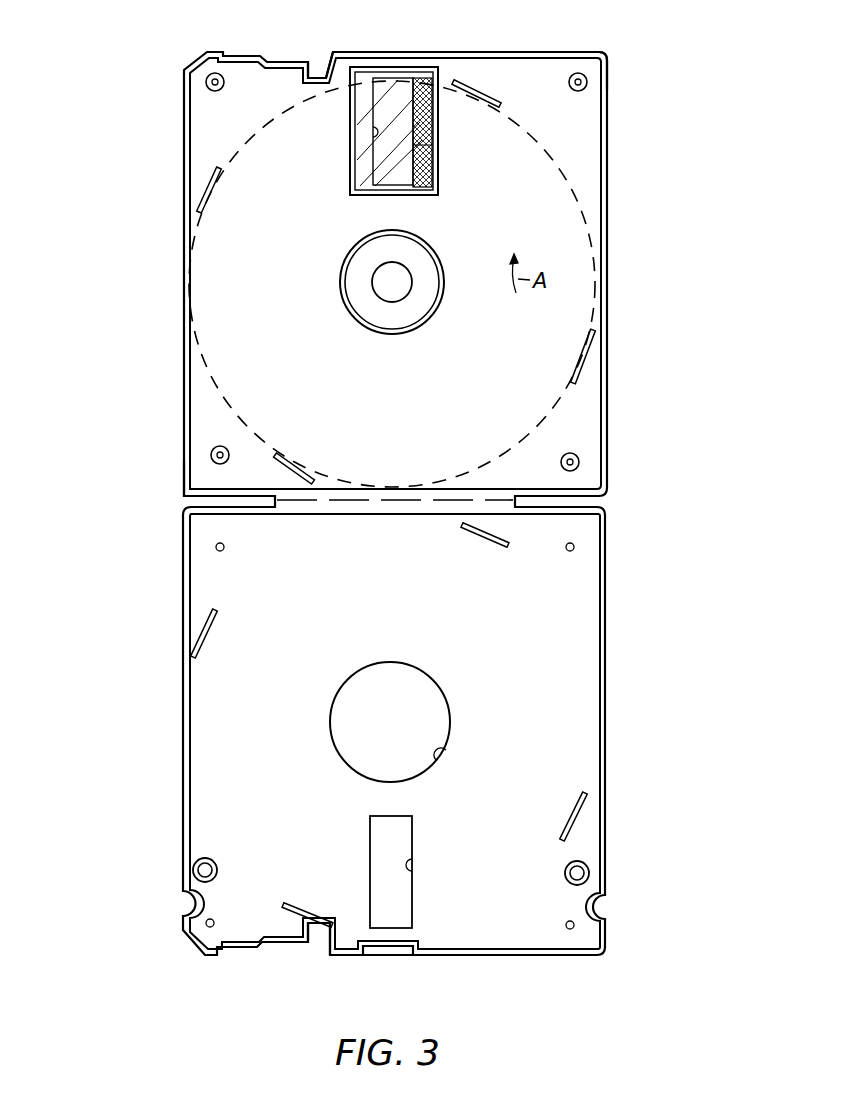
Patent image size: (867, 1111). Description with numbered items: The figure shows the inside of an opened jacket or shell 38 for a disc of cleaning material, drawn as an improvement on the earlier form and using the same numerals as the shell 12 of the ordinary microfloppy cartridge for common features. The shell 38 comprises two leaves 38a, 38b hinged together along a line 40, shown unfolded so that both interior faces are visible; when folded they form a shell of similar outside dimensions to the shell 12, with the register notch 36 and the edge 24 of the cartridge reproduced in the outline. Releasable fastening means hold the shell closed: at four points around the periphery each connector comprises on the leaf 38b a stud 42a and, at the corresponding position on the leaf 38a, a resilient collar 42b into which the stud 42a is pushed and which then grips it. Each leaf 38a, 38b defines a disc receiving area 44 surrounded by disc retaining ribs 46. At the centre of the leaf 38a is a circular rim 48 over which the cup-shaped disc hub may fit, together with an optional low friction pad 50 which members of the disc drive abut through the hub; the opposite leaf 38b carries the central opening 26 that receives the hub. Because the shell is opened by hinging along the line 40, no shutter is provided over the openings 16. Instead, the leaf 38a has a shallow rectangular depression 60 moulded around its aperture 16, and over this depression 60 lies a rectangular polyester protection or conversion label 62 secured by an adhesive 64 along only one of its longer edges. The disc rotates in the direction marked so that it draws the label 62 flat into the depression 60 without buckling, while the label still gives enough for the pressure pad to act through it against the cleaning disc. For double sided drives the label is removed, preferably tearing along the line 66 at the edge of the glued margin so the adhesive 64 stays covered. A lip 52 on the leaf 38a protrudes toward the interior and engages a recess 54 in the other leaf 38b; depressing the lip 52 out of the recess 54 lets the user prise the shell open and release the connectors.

The shell 12 is at (210, 470).
The access window 16 is at (373, 132).
The edge of the cartridge 24 is at (600, 52).
The central opening 26 is at (442, 752).
The register notch 36 is at (315, 50).
The shell 38 is at (118, 456).
The leaf 38a is at (608, 405).
The leaf 38b is at (606, 768).
The hinge line 40 is at (393, 498).
The stud 42a is at (217, 549).
The resilient collar 42b is at (212, 74).
The disc receiving area 44 is at (562, 150).
The disc retaining ribs 46 is at (500, 100).
The circular rim 48 is at (440, 305).
The low friction pad 50 is at (378, 281).
The lip 52 is at (397, 52).
The recess 54 is at (397, 957).
The rectangular depression 60 is at (440, 110).
The protection label 62 is at (440, 82).
The adhesive 64 is at (420, 178).
The tear line 66 is at (422, 148).